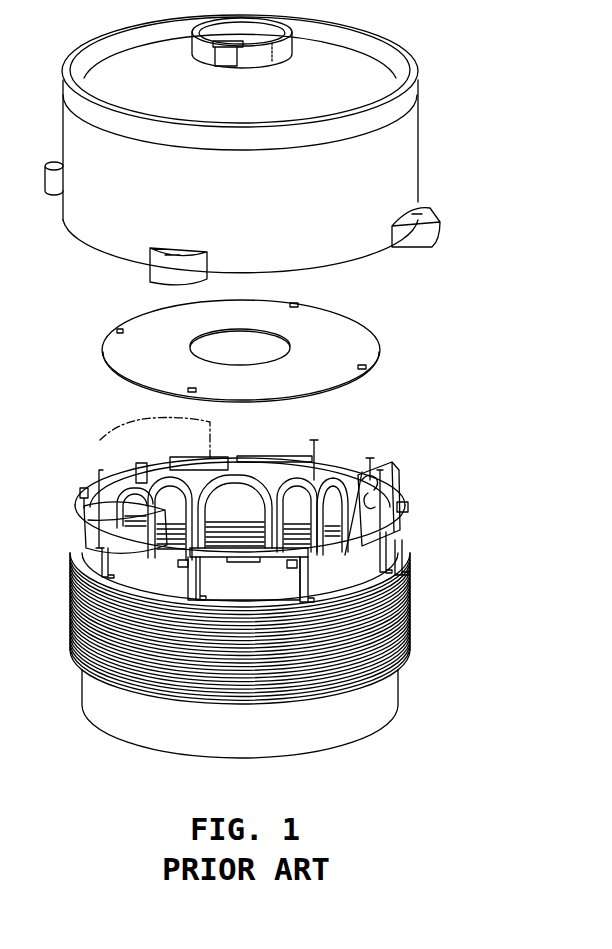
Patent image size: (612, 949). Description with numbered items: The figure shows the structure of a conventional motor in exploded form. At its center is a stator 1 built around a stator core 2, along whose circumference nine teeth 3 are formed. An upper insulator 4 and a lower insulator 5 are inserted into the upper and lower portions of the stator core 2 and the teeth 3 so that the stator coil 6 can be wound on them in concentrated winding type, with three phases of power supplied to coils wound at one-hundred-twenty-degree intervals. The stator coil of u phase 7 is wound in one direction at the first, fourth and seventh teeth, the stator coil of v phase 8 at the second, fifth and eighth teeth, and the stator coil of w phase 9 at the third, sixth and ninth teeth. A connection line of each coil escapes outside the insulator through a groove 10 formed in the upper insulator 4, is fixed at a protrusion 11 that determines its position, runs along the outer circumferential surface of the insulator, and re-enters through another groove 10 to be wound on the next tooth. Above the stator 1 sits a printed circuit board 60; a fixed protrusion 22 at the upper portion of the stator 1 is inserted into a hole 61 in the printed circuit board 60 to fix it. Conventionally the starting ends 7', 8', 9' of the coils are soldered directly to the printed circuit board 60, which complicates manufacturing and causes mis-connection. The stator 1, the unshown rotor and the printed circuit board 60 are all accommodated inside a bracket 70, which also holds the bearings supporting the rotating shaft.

The stator 1 is at (420, 465).
The stator core 2 is at (412, 612).
The teeth 3 is at (264, 456).
The upper insulator 4 is at (405, 535).
The lower insulator 5 is at (393, 695).
The stator coil 6 is at (155, 434).
The stator coil of u phase 7 is at (356, 460).
The starting end of the stator coil of u phase 7' is at (305, 459).
The stator coil of v phase 8 is at (269, 467).
The starting end of the stator coil of v phase 8' is at (376, 494).
The stator coil of w phase 9 is at (269, 494).
The starting end of the stator coil of w phase 9' is at (401, 500).
The groove 10 is at (102, 555).
The protrusion 11 is at (410, 550).
The fixed protrusion 22 is at (80, 493).
The printed circuit board 60 is at (372, 332).
The hole 61 is at (294, 303).
The bracket 70 is at (405, 152).